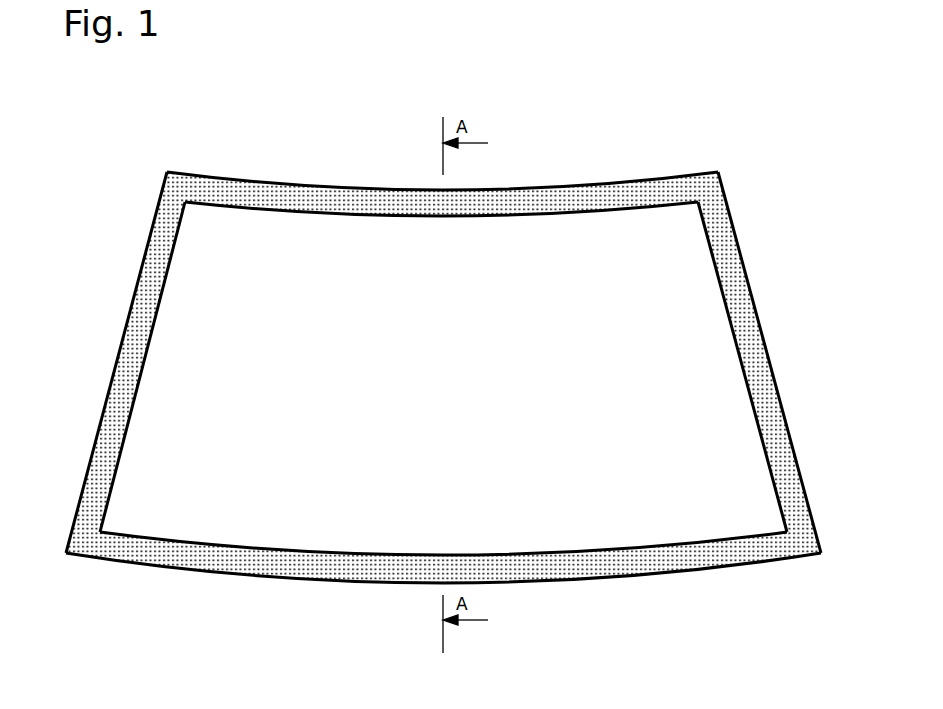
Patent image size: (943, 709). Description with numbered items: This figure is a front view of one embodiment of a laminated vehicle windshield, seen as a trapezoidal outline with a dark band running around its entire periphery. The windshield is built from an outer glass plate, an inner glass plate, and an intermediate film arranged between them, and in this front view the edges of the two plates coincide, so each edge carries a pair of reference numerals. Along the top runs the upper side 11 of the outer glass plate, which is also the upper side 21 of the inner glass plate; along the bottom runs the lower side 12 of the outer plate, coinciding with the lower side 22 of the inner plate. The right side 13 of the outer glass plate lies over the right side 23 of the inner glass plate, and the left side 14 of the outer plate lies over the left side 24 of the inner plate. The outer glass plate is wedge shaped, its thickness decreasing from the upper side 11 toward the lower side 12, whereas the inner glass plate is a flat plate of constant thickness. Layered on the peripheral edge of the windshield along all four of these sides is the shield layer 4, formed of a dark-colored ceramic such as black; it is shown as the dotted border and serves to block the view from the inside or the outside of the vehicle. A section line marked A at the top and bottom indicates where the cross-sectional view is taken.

The shield layer 4 is at (437, 388).
The upper side 11 is at (442, 173).
The upper side 21 is at (497, 188).
The lower side 12 is at (443, 597).
The lower side 22 is at (523, 583).
The right side 13 is at (776, 362).
The right side 23 is at (773, 370).
The left side 14 is at (102, 362).
The left side 24 is at (113, 362).